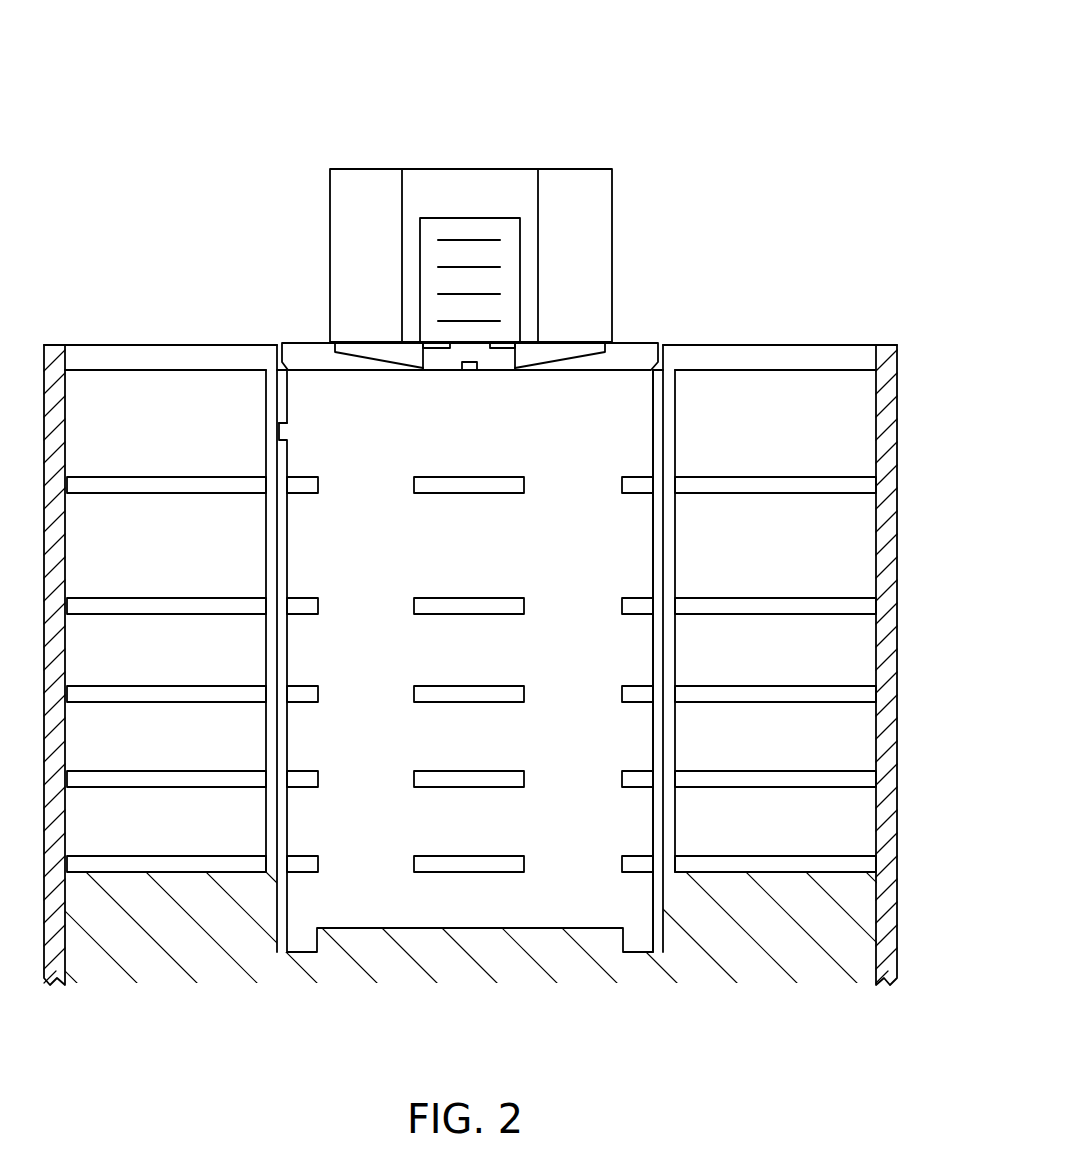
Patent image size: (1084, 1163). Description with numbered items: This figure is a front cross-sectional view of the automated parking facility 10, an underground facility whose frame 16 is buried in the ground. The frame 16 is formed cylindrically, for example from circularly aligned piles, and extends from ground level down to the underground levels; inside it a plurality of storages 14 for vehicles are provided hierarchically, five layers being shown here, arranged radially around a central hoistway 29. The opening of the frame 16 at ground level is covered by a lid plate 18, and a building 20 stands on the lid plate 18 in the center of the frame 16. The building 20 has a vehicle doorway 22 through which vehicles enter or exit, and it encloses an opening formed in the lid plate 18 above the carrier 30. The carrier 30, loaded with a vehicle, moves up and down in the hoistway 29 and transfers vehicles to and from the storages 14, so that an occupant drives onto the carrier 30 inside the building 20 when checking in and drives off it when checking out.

The parking facility 10 is at (727, 84).
The storage 14 is at (167, 477).
The frame 16 is at (897, 452).
The lid plate 18 is at (750, 345).
The building 20 is at (470, 168).
The vehicle doorway 22 is at (470, 217).
The hoistway 29 is at (550, 448).
The carrier 30 is at (470, 340).